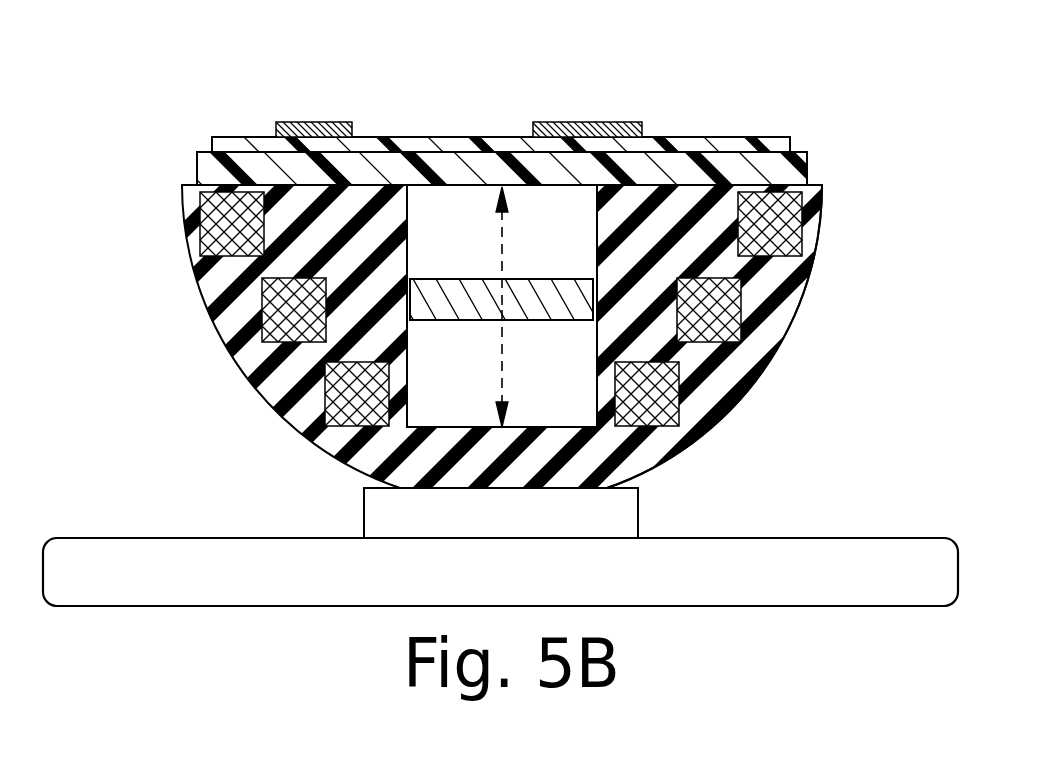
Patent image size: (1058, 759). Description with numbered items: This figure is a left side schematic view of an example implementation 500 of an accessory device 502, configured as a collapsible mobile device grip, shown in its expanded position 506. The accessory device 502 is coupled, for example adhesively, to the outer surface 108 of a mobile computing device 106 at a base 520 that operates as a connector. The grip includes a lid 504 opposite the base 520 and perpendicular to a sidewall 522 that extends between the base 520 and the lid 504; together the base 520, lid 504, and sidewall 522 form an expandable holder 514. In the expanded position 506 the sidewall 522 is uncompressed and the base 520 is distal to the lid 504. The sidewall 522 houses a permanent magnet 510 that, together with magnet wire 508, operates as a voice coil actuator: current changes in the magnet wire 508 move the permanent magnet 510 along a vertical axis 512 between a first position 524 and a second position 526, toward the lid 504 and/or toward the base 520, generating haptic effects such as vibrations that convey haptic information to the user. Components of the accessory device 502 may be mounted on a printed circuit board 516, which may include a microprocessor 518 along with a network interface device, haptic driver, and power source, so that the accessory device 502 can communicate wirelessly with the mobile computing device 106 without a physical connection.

The implementation 500 is at (170, 75).
The accessory device 502 is at (822, 193).
The lid 504 is at (533, 153).
The expanded position 506 is at (178, 485).
The magnet wire 508 is at (802, 236).
The permanent magnet 510 is at (484, 310).
The vertical axis 512 is at (503, 276).
The expandable holder 514 is at (740, 402).
The printed circuit board 516 is at (745, 167).
The microprocessor 518 is at (598, 122).
The base 520 is at (620, 508).
The sidewall 522 is at (597, 390).
The first position 524 is at (498, 190).
The second position 526 is at (498, 421).
The outer surface 108 is at (790, 538).
The mobile computing device 106 is at (833, 593).